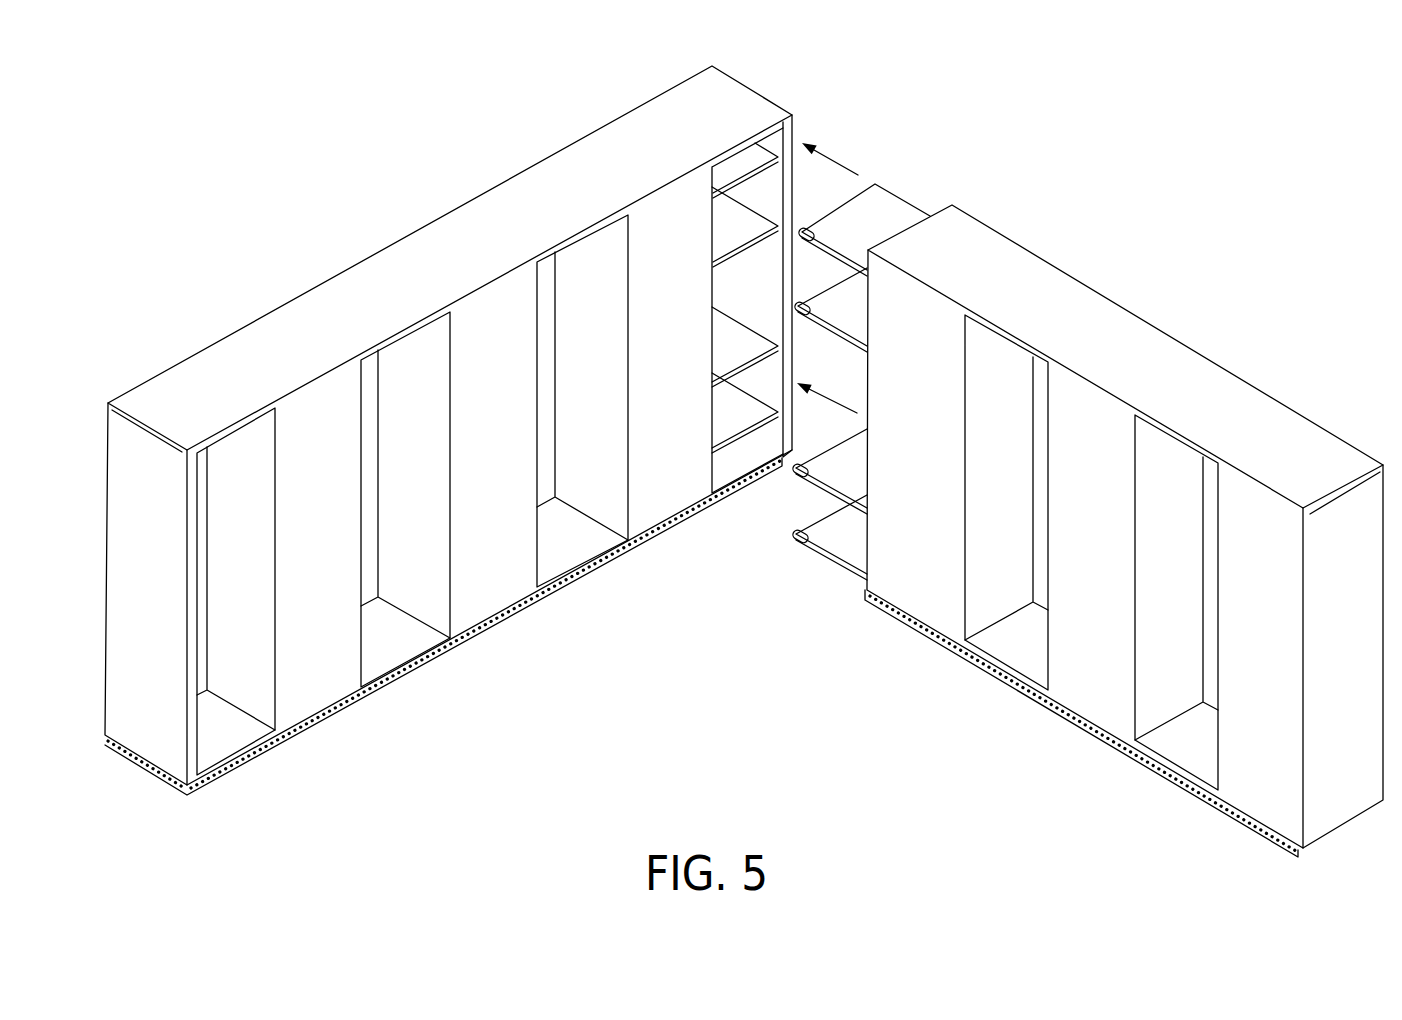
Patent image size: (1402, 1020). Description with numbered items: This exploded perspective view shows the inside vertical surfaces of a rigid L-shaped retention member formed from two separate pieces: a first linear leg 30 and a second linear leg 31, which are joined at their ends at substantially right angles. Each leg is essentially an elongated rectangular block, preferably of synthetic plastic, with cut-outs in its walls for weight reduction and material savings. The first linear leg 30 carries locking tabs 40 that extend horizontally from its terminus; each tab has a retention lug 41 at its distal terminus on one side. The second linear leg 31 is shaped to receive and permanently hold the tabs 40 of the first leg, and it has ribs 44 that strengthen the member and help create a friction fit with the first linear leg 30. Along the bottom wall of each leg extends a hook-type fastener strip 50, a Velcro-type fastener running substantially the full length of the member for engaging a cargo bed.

The first linear leg 30 is at (1143, 314).
The second linear leg 31 is at (421, 226).
The locking tabs 40 is at (840, 547).
The retention lug 41 is at (797, 540).
The ribs 44 is at (722, 226).
The hook-type fastener strip 50 is at (600, 574).